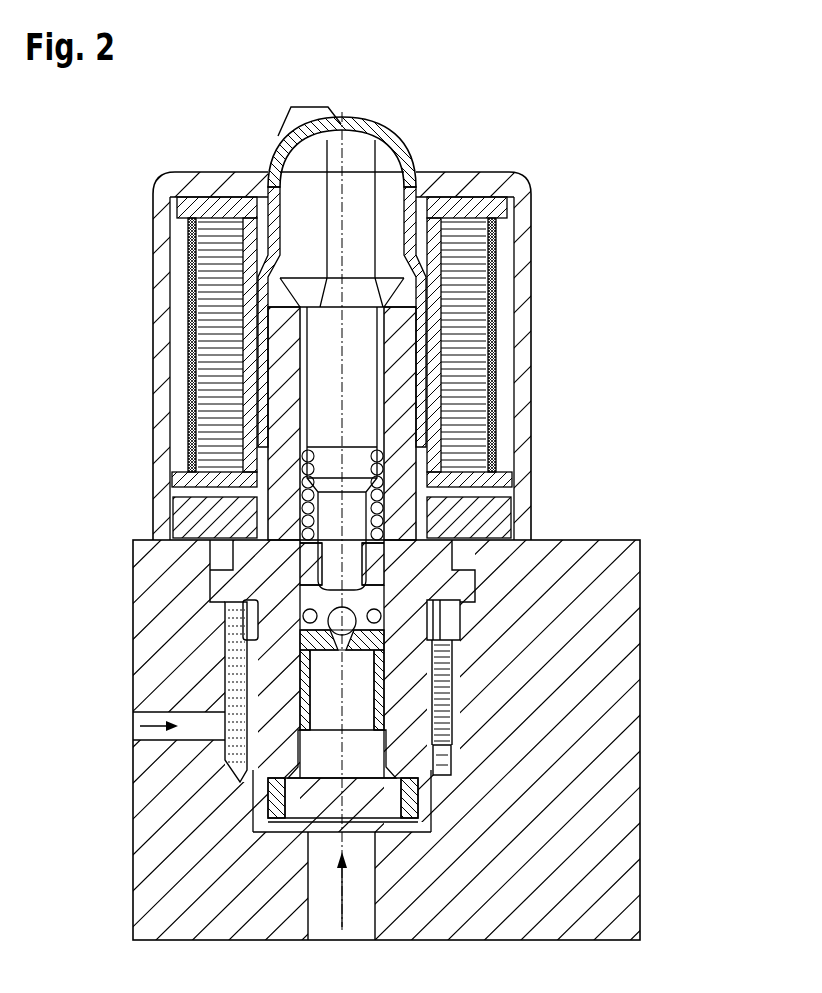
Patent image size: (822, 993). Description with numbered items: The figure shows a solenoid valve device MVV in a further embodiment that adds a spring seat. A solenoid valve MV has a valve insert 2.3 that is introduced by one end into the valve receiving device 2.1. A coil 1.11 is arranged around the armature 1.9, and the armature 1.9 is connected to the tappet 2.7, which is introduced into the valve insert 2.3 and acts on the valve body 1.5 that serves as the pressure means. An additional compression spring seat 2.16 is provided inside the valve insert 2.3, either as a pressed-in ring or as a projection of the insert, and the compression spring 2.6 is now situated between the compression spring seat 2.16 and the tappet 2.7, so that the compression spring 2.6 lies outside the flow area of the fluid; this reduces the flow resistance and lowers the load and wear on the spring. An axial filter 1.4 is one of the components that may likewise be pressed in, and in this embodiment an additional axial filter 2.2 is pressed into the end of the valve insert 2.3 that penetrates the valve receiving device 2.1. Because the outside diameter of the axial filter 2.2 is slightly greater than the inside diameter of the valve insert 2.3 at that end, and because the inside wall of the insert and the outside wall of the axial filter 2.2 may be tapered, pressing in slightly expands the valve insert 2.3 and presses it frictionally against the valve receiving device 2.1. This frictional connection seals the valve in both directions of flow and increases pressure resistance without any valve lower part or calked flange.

The solenoid valve MV is at (351, 93).
The solenoid valve device MVV is at (565, 401).
The coil 1.11 is at (178, 262).
The armature 1.9 is at (396, 293).
The tappet 2.7 is at (333, 423).
The compression spring 2.6 is at (302, 503).
The compression spring seat 2.16 is at (400, 561).
The valve body 1.5 is at (374, 645).
The axial filter 1.4 is at (240, 668).
The valve insert 2.3 is at (413, 724).
The axial filter 2.2 is at (268, 802).
The valve receiving device 2.1 is at (608, 821).